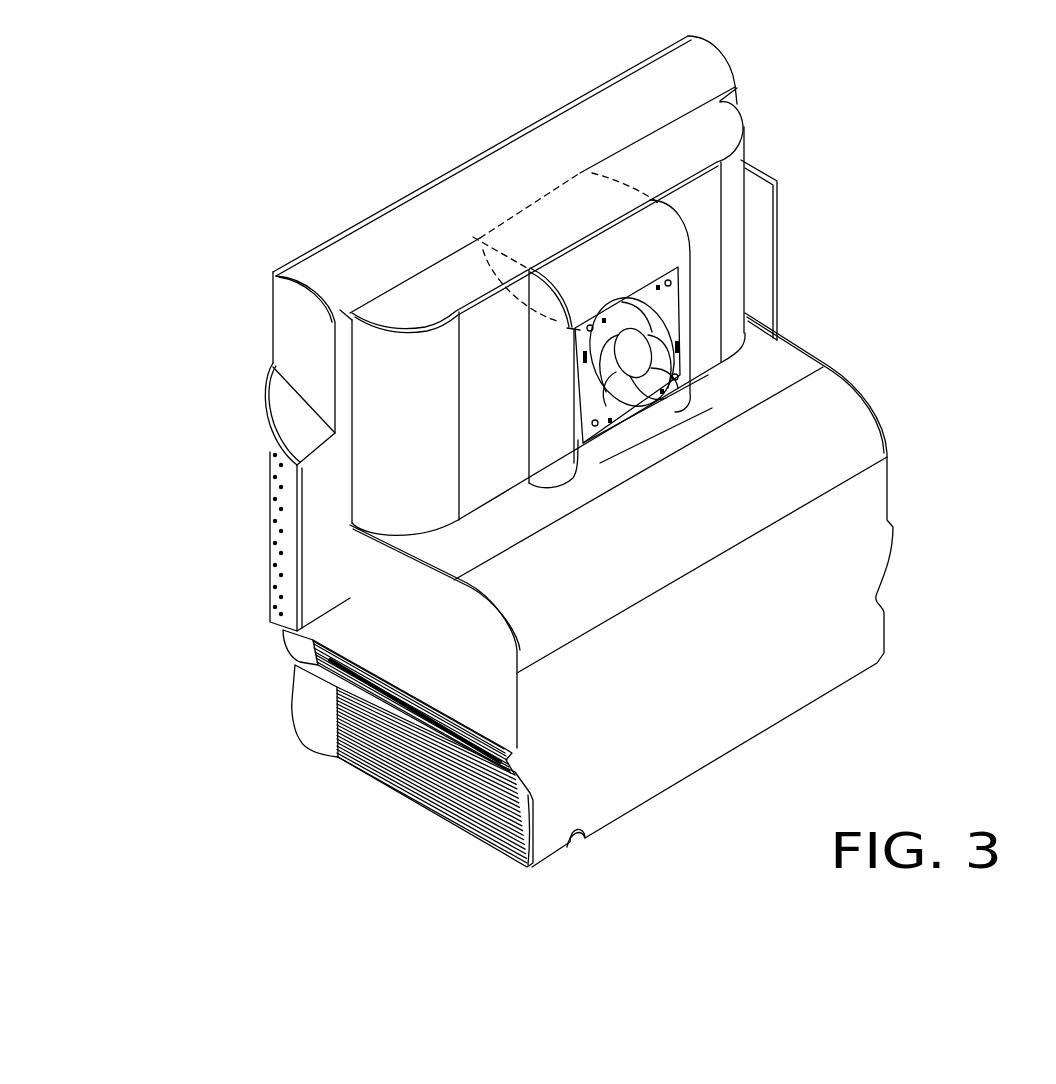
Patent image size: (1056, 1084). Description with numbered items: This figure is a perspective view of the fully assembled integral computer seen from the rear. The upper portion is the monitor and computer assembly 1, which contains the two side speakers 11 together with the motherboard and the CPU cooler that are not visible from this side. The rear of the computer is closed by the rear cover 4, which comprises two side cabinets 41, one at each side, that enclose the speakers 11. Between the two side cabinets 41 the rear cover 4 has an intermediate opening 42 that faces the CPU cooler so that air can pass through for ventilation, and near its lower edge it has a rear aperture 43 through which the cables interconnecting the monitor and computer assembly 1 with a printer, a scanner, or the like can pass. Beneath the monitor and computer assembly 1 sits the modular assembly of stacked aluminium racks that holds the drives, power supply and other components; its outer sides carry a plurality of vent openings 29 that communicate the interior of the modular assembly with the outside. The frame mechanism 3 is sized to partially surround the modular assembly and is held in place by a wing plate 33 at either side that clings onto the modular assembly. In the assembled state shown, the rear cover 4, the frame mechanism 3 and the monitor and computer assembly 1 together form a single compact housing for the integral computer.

The monitor and computer assembly 1 is at (430, 142).
The frame mechanism 3 is at (248, 690).
The rear cover 4 is at (783, 372).
The side speakers 11 is at (273, 452).
The vent openings 29 is at (378, 760).
The wing plate 33 is at (305, 700).
The side cabinets 41 is at (378, 347).
The intermediate opening 42 is at (640, 352).
The rear aperture 43 is at (578, 838).